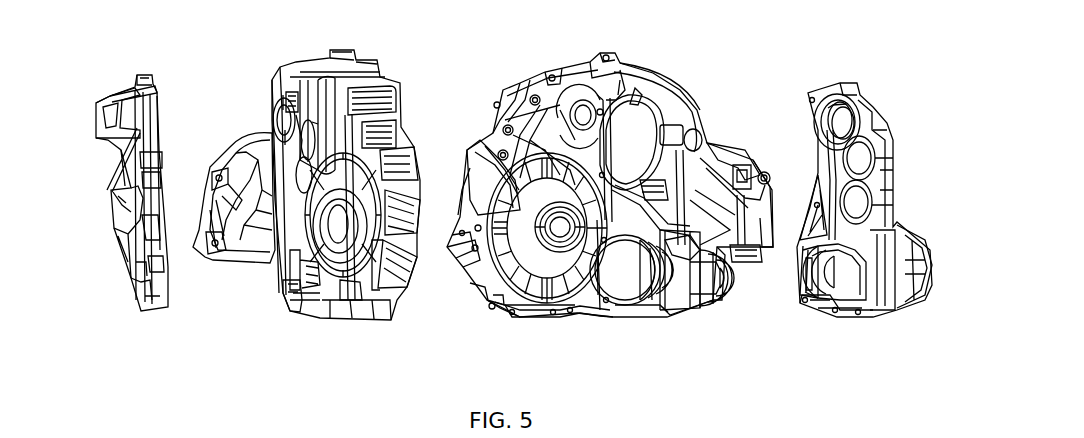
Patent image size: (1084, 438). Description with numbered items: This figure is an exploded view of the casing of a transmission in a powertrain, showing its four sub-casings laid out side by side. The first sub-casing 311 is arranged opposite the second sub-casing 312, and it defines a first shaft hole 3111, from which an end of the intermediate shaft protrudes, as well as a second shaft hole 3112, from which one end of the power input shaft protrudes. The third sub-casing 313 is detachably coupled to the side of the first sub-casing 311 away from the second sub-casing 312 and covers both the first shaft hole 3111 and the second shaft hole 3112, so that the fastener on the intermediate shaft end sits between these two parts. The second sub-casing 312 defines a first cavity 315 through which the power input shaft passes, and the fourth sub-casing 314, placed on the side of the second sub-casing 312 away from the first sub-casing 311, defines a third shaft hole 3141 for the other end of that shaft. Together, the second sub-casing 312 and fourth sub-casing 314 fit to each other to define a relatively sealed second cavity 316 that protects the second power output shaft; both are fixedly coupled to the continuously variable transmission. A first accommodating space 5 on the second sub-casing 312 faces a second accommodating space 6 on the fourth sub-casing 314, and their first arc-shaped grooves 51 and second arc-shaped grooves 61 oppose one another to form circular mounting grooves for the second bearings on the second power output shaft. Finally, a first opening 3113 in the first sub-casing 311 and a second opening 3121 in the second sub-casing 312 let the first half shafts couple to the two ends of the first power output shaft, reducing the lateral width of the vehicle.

The third sub-casing 313 is at (120, 93).
The first sub-casing 311 is at (293, 166).
The first shaft hole 3111 is at (242, 140).
The second shaft hole 3112 is at (278, 117).
The first opening 3113 is at (282, 288).
The second sub-casing 312 is at (602, 194).
The second opening 3121 is at (510, 309).
The first cavity 315 is at (647, 122).
The second cavity 316 is at (612, 270).
The first accommodating space 5 is at (710, 300).
The first arc-shaped grooves 51 is at (665, 313).
The fourth sub-casing 314 is at (822, 97).
The third shaft hole 3141 is at (843, 115).
The second accommodating space 6 is at (810, 305).
The second arc-shaped grooves 61 is at (850, 307).